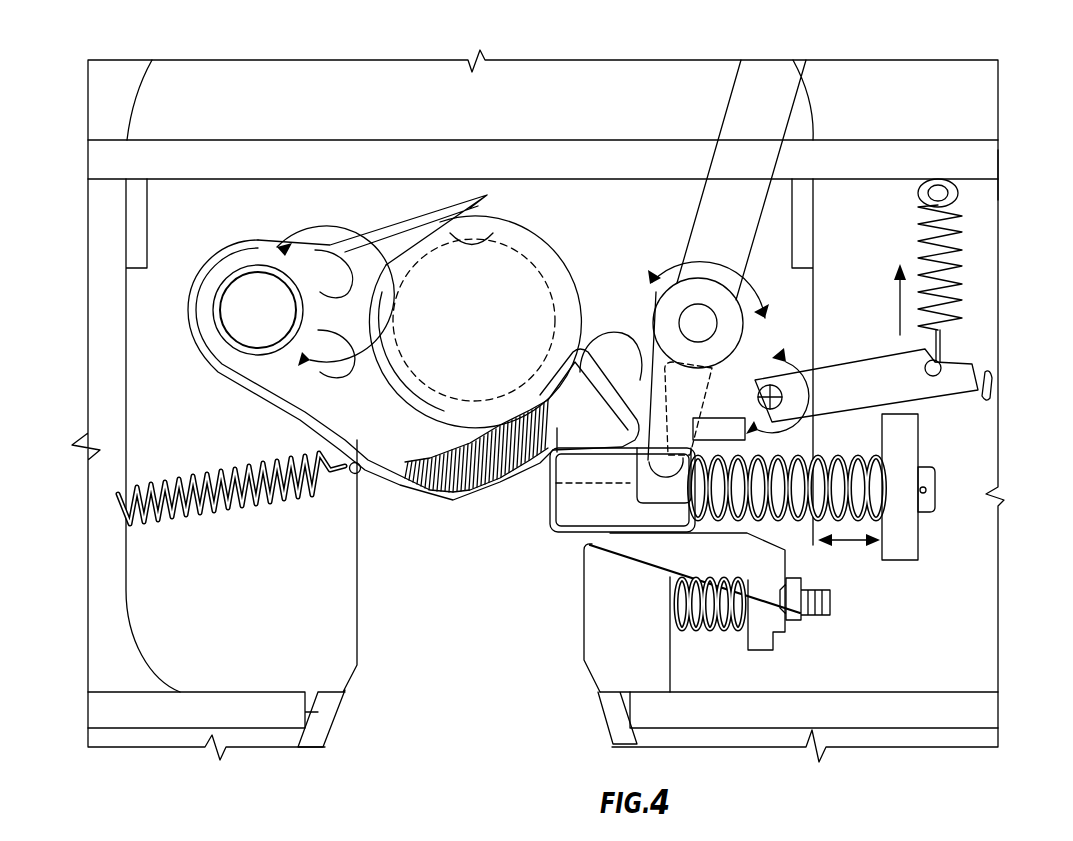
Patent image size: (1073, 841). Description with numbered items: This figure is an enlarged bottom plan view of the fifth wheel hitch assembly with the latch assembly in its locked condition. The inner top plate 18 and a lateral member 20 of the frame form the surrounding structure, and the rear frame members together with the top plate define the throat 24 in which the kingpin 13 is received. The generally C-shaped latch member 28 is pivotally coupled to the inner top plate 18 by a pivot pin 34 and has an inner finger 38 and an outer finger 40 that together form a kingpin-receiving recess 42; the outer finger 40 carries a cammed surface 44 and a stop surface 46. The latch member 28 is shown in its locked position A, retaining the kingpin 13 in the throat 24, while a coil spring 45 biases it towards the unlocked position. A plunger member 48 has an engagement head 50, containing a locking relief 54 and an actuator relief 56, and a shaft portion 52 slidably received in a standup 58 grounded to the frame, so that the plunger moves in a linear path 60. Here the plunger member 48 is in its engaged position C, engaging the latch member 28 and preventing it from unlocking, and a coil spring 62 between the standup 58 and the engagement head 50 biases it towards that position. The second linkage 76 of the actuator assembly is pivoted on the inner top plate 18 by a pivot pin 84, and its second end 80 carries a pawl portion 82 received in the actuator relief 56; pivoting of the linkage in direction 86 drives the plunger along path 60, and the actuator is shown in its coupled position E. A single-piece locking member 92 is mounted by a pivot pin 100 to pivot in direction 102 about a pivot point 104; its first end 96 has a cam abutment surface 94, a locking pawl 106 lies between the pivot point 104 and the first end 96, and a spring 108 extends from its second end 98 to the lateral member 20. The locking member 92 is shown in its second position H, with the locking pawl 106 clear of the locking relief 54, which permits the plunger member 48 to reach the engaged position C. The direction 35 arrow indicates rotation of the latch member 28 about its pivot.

The kingpin 13 is at (537, 260).
The inner top plate 18 is at (276, 95).
The lateral members 20 is at (992, 163).
The throat 24 is at (440, 673).
The latch member 28 is at (418, 490).
The pivot pin 34 is at (237, 331).
The rotation direction 35 is at (318, 258).
The inner finger 38 is at (425, 215).
The outer finger 40 is at (560, 493).
The kingpin-receiving recess 42 is at (470, 240).
The cammed surface 44 is at (641, 345).
The coil spring 45 is at (357, 590).
The stop surface 46 is at (590, 546).
The plunger member 48 is at (548, 512).
The engagement head 50 is at (652, 440).
The shaft portion 52 is at (935, 480).
The locking relief 54 is at (645, 440).
The actuator relief 56 is at (660, 510).
The standup 58 is at (918, 542).
The linear path 60 is at (845, 545).
The coil spring 62 is at (878, 465).
The second linkage 76 is at (793, 117).
The second end 80 is at (735, 340).
The pawl portion 82 is at (667, 460).
The pivot pin 84 is at (745, 336).
The direction 86 is at (742, 290).
The locking member 92 is at (976, 364).
The cam abutment surface 94 is at (637, 417).
The first end 96 is at (640, 378).
The second end 98 is at (963, 377).
The pivot pin 100 is at (783, 393).
The direction 102 is at (790, 375).
The pivot point 104 is at (810, 382).
The locking pawl 106 is at (600, 410).
The spring 108 is at (955, 290).
The locked position A is at (388, 237).
The engaged position C is at (727, 352).
The coupled position E is at (737, 213).
The second position H is at (650, 300).